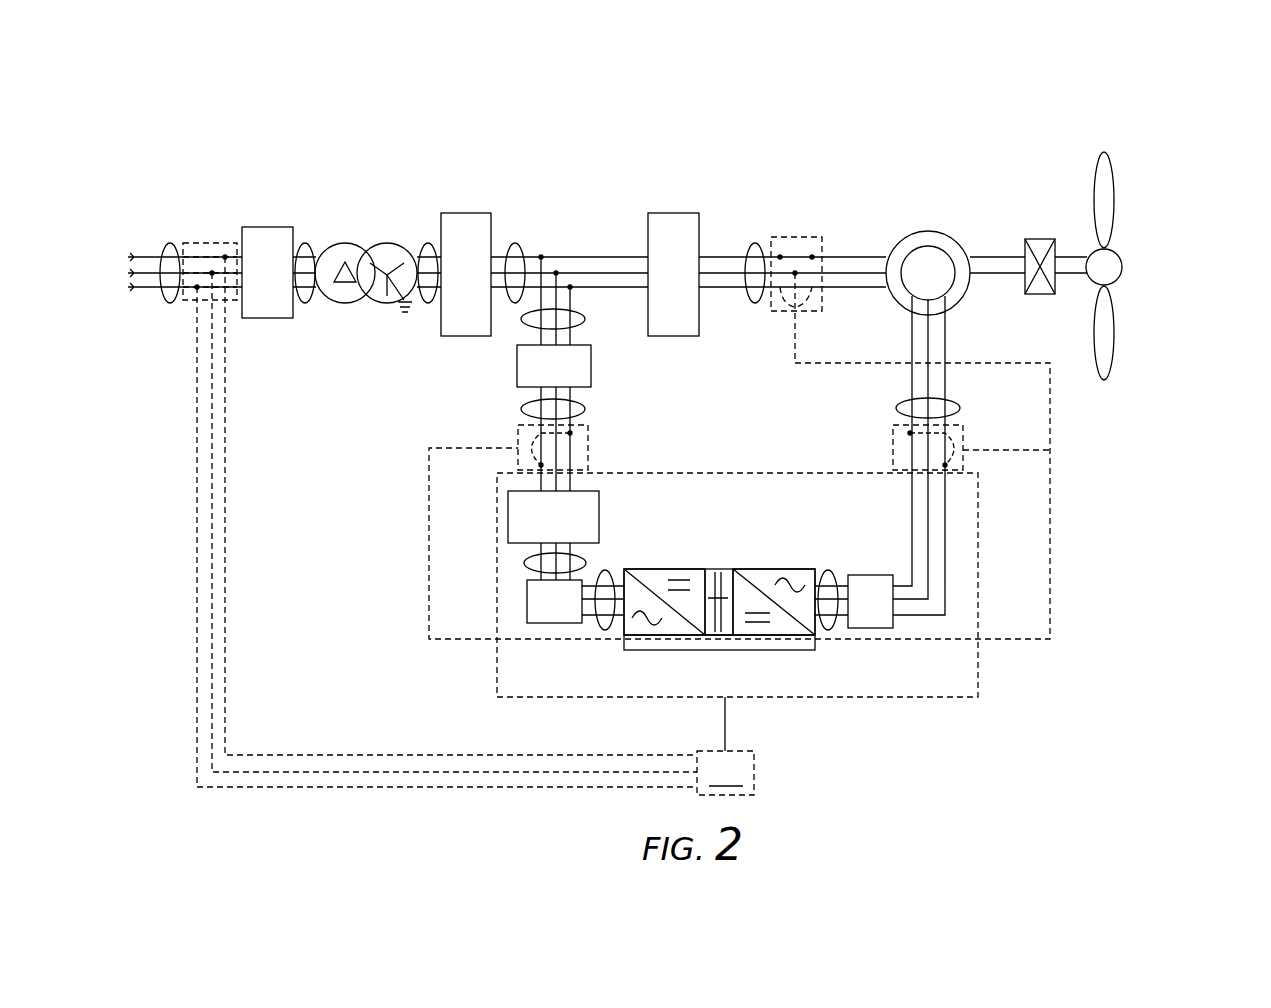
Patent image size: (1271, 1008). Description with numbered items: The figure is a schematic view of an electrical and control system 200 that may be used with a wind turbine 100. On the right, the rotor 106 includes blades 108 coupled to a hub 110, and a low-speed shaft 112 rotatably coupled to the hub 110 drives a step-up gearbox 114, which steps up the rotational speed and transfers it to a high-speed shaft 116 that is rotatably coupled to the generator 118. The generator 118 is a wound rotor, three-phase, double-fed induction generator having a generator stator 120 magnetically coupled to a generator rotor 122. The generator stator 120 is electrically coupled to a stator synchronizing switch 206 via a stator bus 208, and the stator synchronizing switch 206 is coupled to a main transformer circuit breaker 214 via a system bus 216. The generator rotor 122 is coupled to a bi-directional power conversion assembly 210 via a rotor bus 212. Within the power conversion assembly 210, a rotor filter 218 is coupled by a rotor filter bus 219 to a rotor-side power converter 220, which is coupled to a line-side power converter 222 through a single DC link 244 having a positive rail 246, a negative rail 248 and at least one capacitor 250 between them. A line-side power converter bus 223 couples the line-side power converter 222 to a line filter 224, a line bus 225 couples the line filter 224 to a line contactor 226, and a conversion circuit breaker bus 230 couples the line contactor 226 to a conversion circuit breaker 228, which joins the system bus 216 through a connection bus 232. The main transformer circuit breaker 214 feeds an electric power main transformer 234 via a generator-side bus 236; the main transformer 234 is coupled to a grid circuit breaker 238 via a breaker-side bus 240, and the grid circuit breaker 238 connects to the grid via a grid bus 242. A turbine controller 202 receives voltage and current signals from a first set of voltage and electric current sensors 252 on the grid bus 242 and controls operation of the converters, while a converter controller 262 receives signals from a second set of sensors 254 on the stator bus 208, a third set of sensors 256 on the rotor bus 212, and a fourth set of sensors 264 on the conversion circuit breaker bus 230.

The wind turbine 100 is at (1161, 228).
The rotor 106 is at (1161, 266).
The blades 108 is at (1116, 205).
The hub 110 is at (1124, 268).
The low-speed shaft 112 is at (1063, 257).
The step-up gearbox 114 is at (1035, 239).
The high-speed shaft 116 is at (990, 257).
The generator 118 is at (927, 209).
The generator stator 120 is at (928, 231).
The generator rotor 122 is at (918, 258).
The electrical and control system 200 is at (222, 128).
The turbine controller 202 is at (725, 746).
The stator synchronizing switch 206 is at (672, 213).
The stator bus 208 is at (754, 243).
The bi-directional power conversion assembly 210 is at (978, 592).
The rotor bus 212 is at (963, 410).
The main transformer circuit breaker 214 is at (465, 213).
The system bus 216 is at (517, 243).
The rotor filter 218 is at (868, 585).
The rotor filter bus 219 is at (829, 572).
The rotor-side power converter 220 is at (815, 637).
The line-side power converter 222 is at (624, 632).
The line-side power converter bus 223 is at (606, 572).
The line filter 224 is at (525, 597).
The line bus 225 is at (525, 563).
The line contactor 226 is at (508, 515).
The conversion circuit breaker 228 is at (592, 367).
The conversion circuit breaker bus 230 is at (585, 409).
The connection bus 232 is at (585, 318).
The electric power main transformer 234 is at (386, 243).
The generator-side bus 236 is at (427, 230).
The grid circuit breaker 238 is at (255, 227).
The breaker-side bus 240 is at (307, 243).
The grid bus 242 is at (170, 243).
The DC link 244 is at (705, 535).
The positive rail 246 is at (725, 577).
The negative rail 248 is at (728, 638).
The capacitor 250 is at (716, 595).
The first set of voltage and electric current sensors 252 is at (187, 307).
The second set of voltage and electric current sensors 254 is at (811, 235).
The third set of voltage and electric current sensors 256 is at (880, 450).
The converter controller 262 is at (706, 586).
The fourth set of voltage and electric current sensors 264 is at (590, 456).